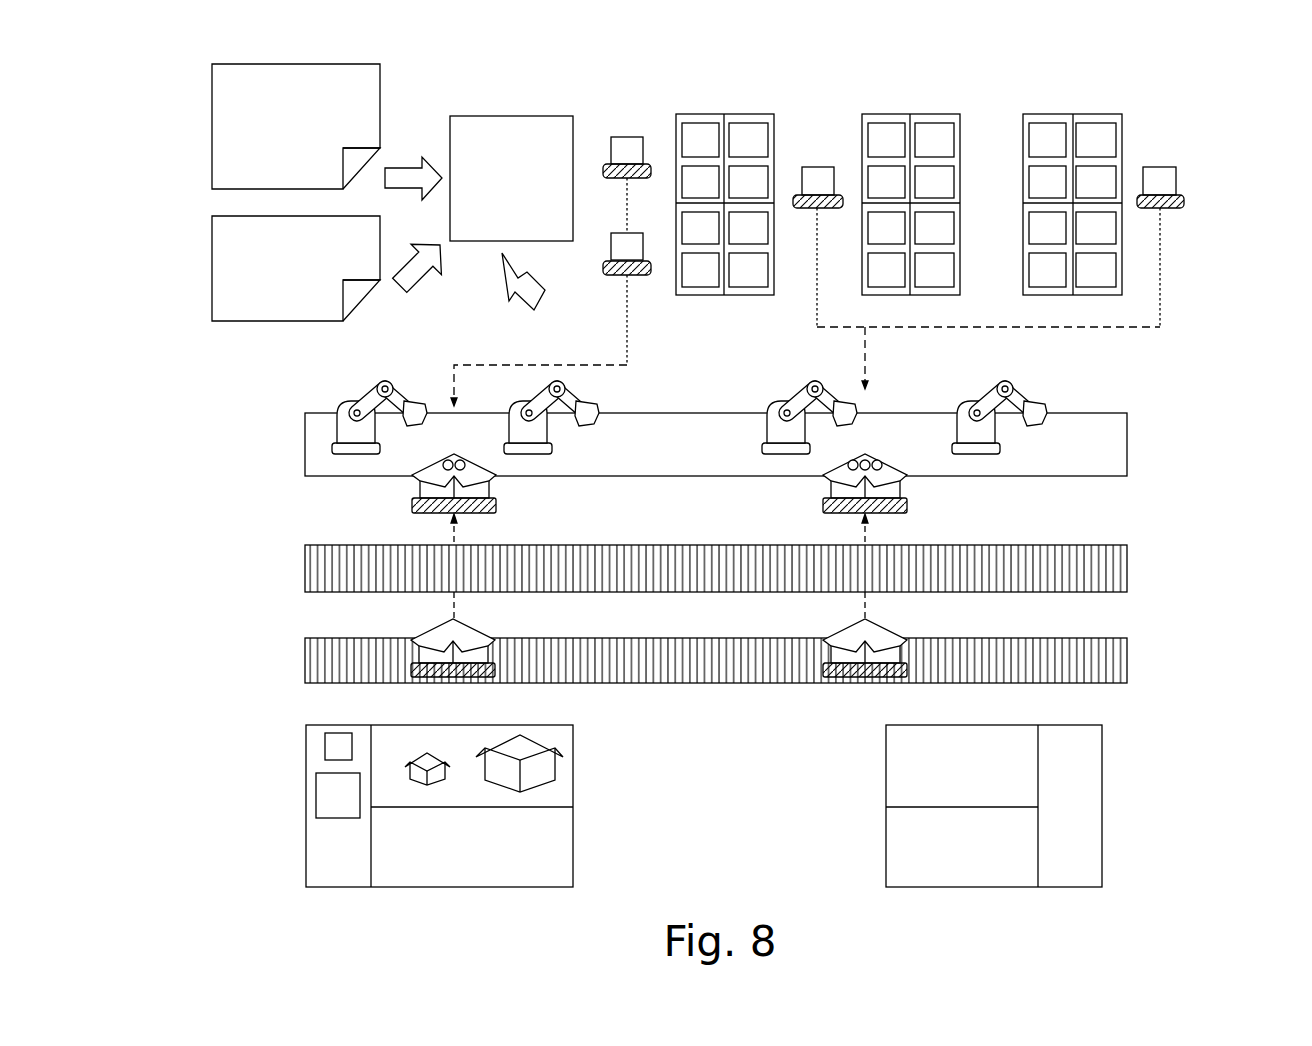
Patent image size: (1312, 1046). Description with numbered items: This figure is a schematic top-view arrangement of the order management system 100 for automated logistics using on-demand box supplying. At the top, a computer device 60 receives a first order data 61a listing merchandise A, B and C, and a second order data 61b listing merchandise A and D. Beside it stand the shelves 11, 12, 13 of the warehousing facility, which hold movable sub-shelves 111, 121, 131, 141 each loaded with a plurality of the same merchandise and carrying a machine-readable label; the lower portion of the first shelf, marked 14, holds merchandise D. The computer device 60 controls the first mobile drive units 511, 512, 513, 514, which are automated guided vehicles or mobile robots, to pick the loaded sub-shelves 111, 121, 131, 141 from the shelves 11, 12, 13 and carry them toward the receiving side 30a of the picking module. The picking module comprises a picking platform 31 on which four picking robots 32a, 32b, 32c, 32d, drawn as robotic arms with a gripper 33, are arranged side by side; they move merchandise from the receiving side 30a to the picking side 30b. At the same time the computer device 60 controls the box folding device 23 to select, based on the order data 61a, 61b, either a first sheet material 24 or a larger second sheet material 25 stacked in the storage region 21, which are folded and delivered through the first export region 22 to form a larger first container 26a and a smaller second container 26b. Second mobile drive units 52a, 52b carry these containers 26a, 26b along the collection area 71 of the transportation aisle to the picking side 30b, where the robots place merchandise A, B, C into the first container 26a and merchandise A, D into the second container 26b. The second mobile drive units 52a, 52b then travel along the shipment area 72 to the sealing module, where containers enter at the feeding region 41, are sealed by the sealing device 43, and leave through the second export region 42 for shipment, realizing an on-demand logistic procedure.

The order management system 100 is at (1287, 88).
The shelf 11 is at (747, 117).
The shelf 12 is at (933, 117).
The shelf 13 is at (1096, 117).
The fourth storage area 14 is at (698, 293).
The sub-shelf 111 is at (632, 137).
The sub-shelf 121 is at (818, 168).
The sub-shelf 131 is at (1170, 168).
The sub-shelf 141 is at (640, 240).
The first mobile drive unit 511 is at (606, 168).
The first mobile drive unit 512 is at (808, 210).
The first mobile drive unit 513 is at (1185, 205).
The first mobile drive unit 514 is at (602, 270).
The computer device 60 is at (514, 123).
The first order data 61a is at (212, 170).
The second order data 61b is at (212, 305).
The receiving side 30a is at (328, 395).
The picking side 30b is at (328, 491).
The picking platform 31 is at (305, 443).
The picking robot 32a is at (357, 400).
The picking robot 32b is at (578, 403).
The picking robot 32c is at (767, 428).
The picking robot 32d is at (1030, 412).
The gripper 33 is at (1022, 400).
The first container 26a is at (907, 490).
The second container 26b is at (487, 490).
The second mobile drive unit 52a is at (823, 512).
The second mobile drive unit 52b is at (415, 512).
The collection area 71 is at (1127, 660).
The shipment area 72 is at (1127, 568).
The storage region 21 is at (344, 863).
The first export region 22 is at (565, 785).
The box folding device 23 is at (565, 862).
The first sheet material 24 is at (325, 748).
The second sheet material 25 is at (316, 803).
The feeding region 41 is at (895, 785).
The second export region 42 is at (1073, 868).
The sealing device 43 is at (895, 862).